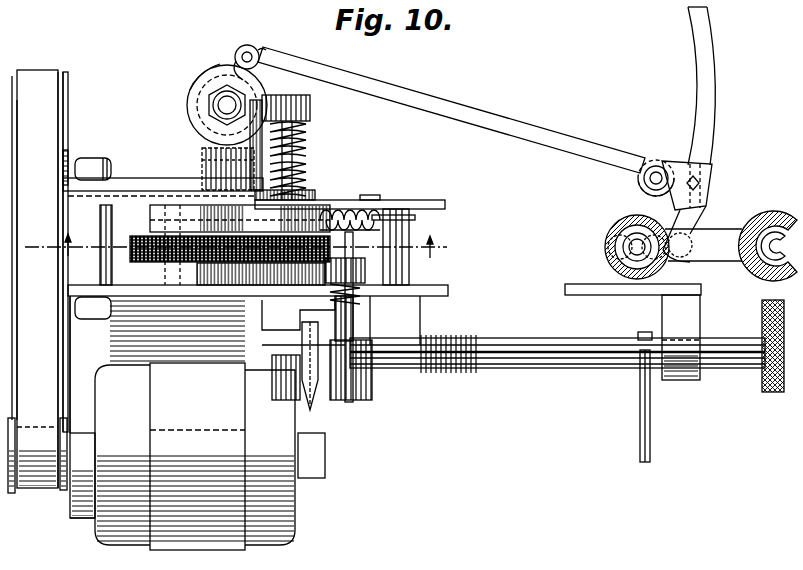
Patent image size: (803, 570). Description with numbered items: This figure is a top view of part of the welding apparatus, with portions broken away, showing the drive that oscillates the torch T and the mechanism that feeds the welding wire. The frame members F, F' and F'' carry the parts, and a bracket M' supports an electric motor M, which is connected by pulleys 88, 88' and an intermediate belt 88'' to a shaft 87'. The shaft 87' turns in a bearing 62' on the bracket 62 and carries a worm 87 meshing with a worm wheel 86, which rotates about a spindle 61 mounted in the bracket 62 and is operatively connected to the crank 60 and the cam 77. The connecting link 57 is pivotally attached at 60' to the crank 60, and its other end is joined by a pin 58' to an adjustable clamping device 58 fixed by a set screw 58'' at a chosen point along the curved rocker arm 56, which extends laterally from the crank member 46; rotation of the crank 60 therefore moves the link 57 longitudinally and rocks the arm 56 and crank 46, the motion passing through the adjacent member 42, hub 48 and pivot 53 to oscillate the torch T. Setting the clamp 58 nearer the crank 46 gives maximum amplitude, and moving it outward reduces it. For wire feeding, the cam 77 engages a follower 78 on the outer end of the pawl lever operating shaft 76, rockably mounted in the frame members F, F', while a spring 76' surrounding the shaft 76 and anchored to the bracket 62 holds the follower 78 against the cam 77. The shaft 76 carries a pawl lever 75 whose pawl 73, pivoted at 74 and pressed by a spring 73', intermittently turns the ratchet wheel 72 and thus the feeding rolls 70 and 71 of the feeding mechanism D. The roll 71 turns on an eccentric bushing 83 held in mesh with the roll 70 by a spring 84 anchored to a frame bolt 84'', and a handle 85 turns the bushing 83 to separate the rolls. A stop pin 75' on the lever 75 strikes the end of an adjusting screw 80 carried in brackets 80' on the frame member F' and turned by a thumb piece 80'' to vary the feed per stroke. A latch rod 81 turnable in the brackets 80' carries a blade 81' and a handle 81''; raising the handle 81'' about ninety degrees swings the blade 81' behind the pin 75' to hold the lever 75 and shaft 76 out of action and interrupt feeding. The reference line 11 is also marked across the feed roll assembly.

The section line / shaft axis 11 is at (249, 246).
The arm 42 is at (718, 232).
The crank member 46 is at (690, 258).
The hub bearing 48 is at (624, 226).
The shaft 53 is at (606, 238).
The curved rocker arm 56 is at (712, 85).
The connecting link 57 is at (493, 118).
The adjustable clamping device 58 is at (703, 179).
The pin 58' is at (659, 161).
The set screw 58'' is at (722, 184).
The crank 60 is at (245, 50).
The pivot connection 60' is at (277, 40).
The spindle 61 is at (215, 95).
The bracket 62 is at (163, 160).
The bearing 62' is at (105, 152).
The feeding roll 70 is at (348, 208).
The feeding roll 71 is at (135, 255).
The ratchet wheel 72 is at (196, 273).
The pawl 73 is at (354, 267).
The spring 73' is at (370, 300).
The pawl pivot 74 is at (386, 382).
The pawl lever 75 is at (300, 350).
The stop pin 75' is at (285, 366).
The pawl lever operating shaft 76 is at (307, 160).
The spring 76' is at (309, 173).
The cam 77 is at (195, 110).
The follower 78 is at (312, 108).
The adjusting screw 80 is at (557, 339).
The brackets 80' is at (664, 337).
The thumb piece 80'' is at (756, 346).
The latch rod 81 is at (482, 362).
The blade 81' is at (360, 359).
The handle 81'' is at (628, 397).
The bushing 83 is at (156, 223).
The spring 84 is at (411, 218).
The frame bolt 84'' is at (414, 220).
The handle 85 is at (372, 210).
The worm wheel 86 is at (220, 64).
The worm 87 is at (207, 169).
The shaft 87' is at (83, 150).
The pulley 88 is at (37, 294).
The pulley 88' is at (82, 278).
The belt 88'' is at (35, 260).
The feeding mechanism D is at (312, 198).
The frame plate F is at (356, 188).
The frame plate F' is at (263, 315).
The frame plate F'' is at (633, 300).
The electric motor M is at (210, 456).
The bracket M' is at (157, 364).
The welding torch T is at (742, 272).